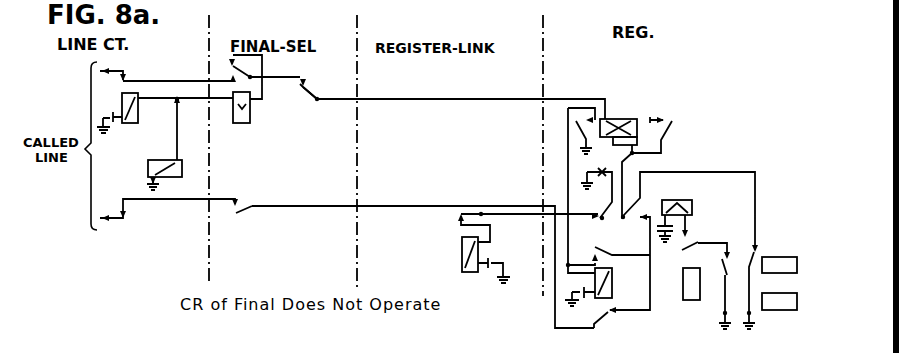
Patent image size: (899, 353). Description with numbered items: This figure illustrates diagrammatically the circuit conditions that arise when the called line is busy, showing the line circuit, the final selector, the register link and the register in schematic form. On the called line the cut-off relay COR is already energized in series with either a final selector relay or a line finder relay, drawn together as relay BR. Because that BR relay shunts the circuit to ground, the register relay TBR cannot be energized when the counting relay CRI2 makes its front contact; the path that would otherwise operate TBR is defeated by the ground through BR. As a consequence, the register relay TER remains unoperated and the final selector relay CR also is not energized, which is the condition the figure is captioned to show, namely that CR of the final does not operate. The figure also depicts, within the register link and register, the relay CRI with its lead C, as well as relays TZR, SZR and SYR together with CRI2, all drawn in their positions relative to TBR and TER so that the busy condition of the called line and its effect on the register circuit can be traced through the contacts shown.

The cut-off relay COR is at (165, 113).
The BR relay BR is at (164, 139).
The CR relay CR is at (253, 107).
The CRI relay CRI is at (471, 249).
The C lead C is at (503, 216).
The TBR relay TBR is at (618, 125).
The TZR relay TZR is at (689, 221).
The TER relay TER is at (604, 287).
The SZR relay SZR is at (690, 294).
The counting relay CRI2 is at (778, 257).
The SYR relay SYR is at (779, 294).